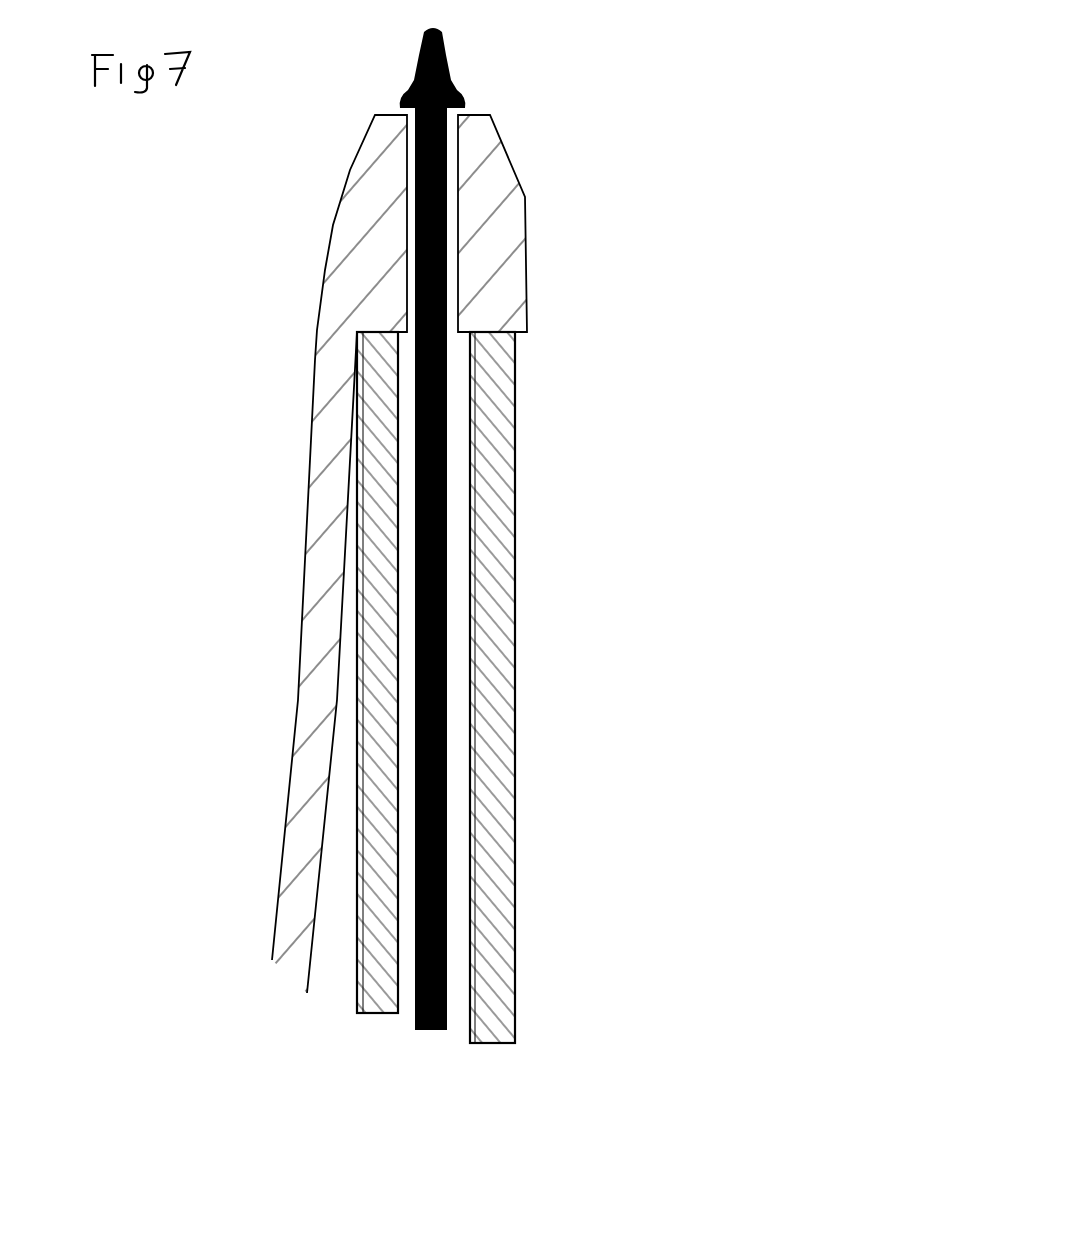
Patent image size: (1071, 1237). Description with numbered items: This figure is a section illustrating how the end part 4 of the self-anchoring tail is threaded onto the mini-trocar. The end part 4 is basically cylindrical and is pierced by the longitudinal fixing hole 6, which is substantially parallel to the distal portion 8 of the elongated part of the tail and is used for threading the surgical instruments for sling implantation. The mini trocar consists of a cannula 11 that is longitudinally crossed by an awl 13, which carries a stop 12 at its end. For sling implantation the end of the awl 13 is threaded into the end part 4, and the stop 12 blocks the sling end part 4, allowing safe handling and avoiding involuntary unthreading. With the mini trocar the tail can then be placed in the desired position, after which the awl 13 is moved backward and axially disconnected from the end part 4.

The end part 4 is at (508, 235).
The fixing hole 6 is at (410, 170).
The distal portion 8 is at (302, 800).
The cannula 11 is at (497, 985).
The stop 12 is at (463, 90).
The awl 13 is at (448, 518).